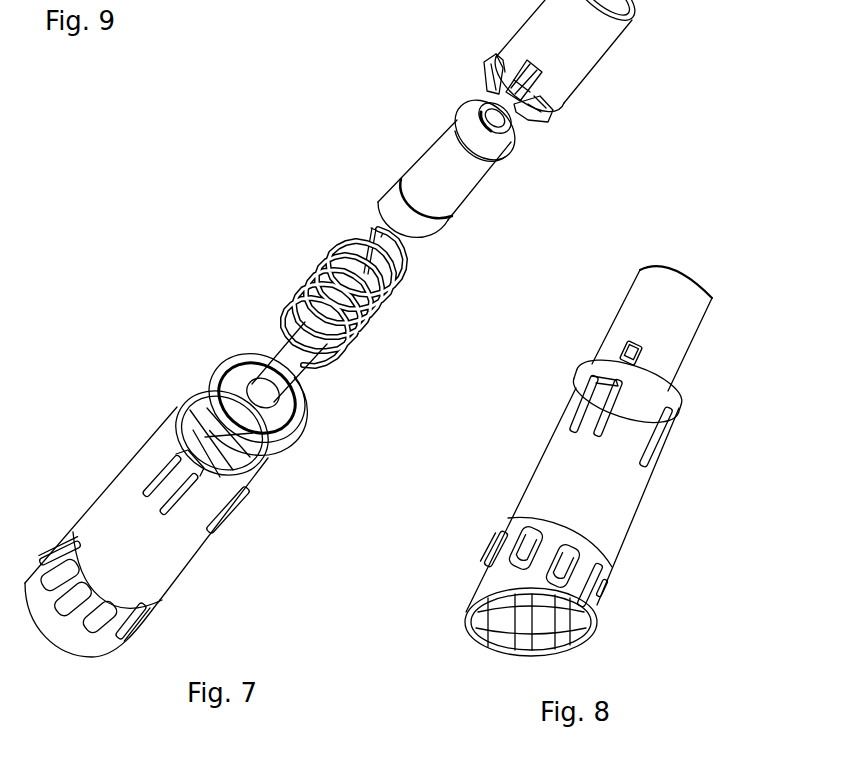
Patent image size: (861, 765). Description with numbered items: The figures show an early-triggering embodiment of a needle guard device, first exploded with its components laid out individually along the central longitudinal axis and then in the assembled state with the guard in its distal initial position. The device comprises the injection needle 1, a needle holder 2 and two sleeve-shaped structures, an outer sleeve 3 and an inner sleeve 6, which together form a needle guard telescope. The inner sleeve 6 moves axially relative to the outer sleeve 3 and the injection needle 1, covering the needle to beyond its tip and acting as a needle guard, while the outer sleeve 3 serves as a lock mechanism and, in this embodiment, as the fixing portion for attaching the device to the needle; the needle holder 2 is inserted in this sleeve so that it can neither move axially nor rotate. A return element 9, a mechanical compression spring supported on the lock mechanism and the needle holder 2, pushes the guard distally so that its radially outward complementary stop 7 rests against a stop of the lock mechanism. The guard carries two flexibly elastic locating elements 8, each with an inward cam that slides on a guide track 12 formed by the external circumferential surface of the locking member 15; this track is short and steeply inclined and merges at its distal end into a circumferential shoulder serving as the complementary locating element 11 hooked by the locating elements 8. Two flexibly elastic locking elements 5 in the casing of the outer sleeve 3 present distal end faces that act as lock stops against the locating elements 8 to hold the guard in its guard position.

In FIG. 7, the injection needle 1 is at (393, 272).
In FIG. 7, the needle holder 2 is at (282, 377).
In FIG. 7, the outer sleeve 3 is at (172, 557).
In FIG. 8, the outer sleeve 3 is at (627, 507).
In FIG. 7, the locking element 5 is at (173, 473).
In FIG. 8, the locking element 5 is at (598, 405).
In FIG. 7, the inner sleeve 6 is at (590, 53).
In FIG. 8, the inner sleeve 6 is at (692, 323).
In FIG. 7, the complementary stop 7 is at (491, 62).
In FIG. 7, the locating element 8 is at (519, 90).
In FIG. 8, the locating element 8 is at (632, 361).
In FIG. 7, the return element 9 is at (368, 315).
In FIG. 7, the complementary locating element 11 is at (457, 133).
In FIG. 7, the guide track 12 is at (503, 140).
In FIG. 7, the locking member 15 is at (457, 188).